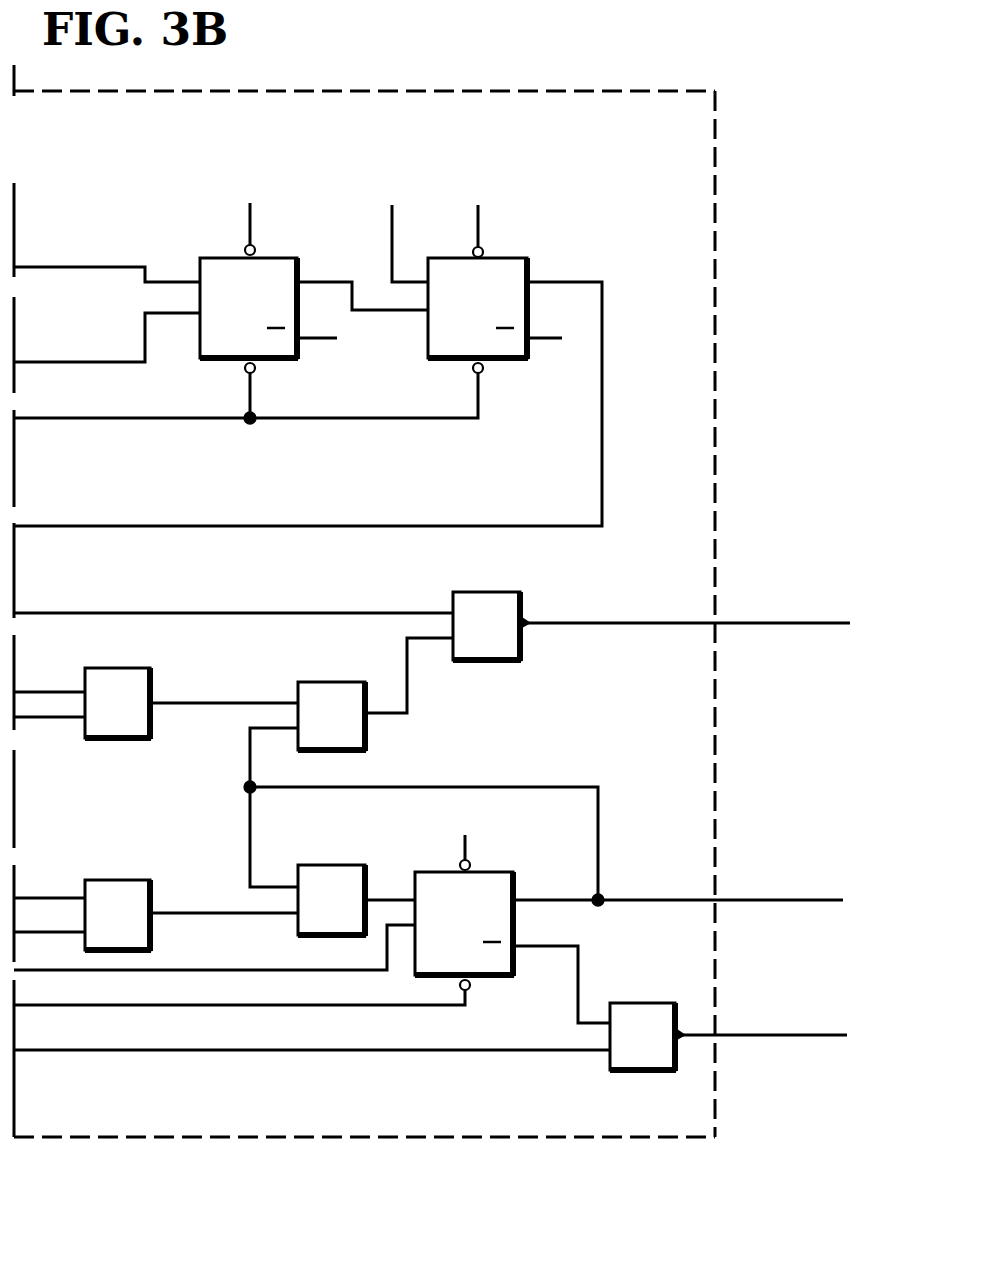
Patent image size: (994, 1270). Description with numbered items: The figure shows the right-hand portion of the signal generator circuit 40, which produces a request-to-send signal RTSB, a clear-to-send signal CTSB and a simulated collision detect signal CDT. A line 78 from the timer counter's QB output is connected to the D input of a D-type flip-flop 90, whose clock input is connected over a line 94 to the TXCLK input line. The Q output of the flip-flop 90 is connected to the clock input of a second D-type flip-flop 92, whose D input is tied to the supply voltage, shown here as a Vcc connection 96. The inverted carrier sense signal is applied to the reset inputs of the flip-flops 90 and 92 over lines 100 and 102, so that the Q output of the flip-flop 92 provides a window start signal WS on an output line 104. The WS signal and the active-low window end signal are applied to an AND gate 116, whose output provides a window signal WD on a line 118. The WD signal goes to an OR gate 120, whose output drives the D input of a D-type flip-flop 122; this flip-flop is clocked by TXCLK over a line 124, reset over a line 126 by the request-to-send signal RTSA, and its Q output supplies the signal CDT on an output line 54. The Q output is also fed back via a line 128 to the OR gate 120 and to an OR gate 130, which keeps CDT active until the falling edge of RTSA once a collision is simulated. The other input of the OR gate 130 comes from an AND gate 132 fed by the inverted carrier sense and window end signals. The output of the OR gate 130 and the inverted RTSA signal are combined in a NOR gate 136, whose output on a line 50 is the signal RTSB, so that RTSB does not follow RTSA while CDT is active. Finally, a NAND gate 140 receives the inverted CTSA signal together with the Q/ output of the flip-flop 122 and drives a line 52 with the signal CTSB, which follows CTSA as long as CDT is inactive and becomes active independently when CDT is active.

The signal generator circuit 40 is at (716, 198).
The line 78 is at (80, 267).
The line 94 is at (97, 362).
The D-type flip-flop 90 is at (277, 258).
The Vcc supply line 96 is at (392, 270).
The D-type flip-flop 92 is at (505, 258).
The line 100 is at (251, 398).
The line 102 is at (390, 418).
The output line 104 is at (602, 303).
The NOR gate 136 is at (517, 592).
The output line 50 is at (737, 624).
The AND gate 132 is at (113, 740).
The OR gate 130 is at (300, 683).
The line 128 is at (520, 786).
The AND gate 116 is at (120, 880).
The line 118 is at (197, 913).
The OR gate 120 is at (325, 865).
The D-type flip-flop 122 is at (505, 872).
The line 124 is at (255, 970).
The line 126 is at (350, 1005).
The output line 54 is at (737, 900).
The NAND gate 140 is at (625, 1072).
The output line 52 is at (737, 1036).